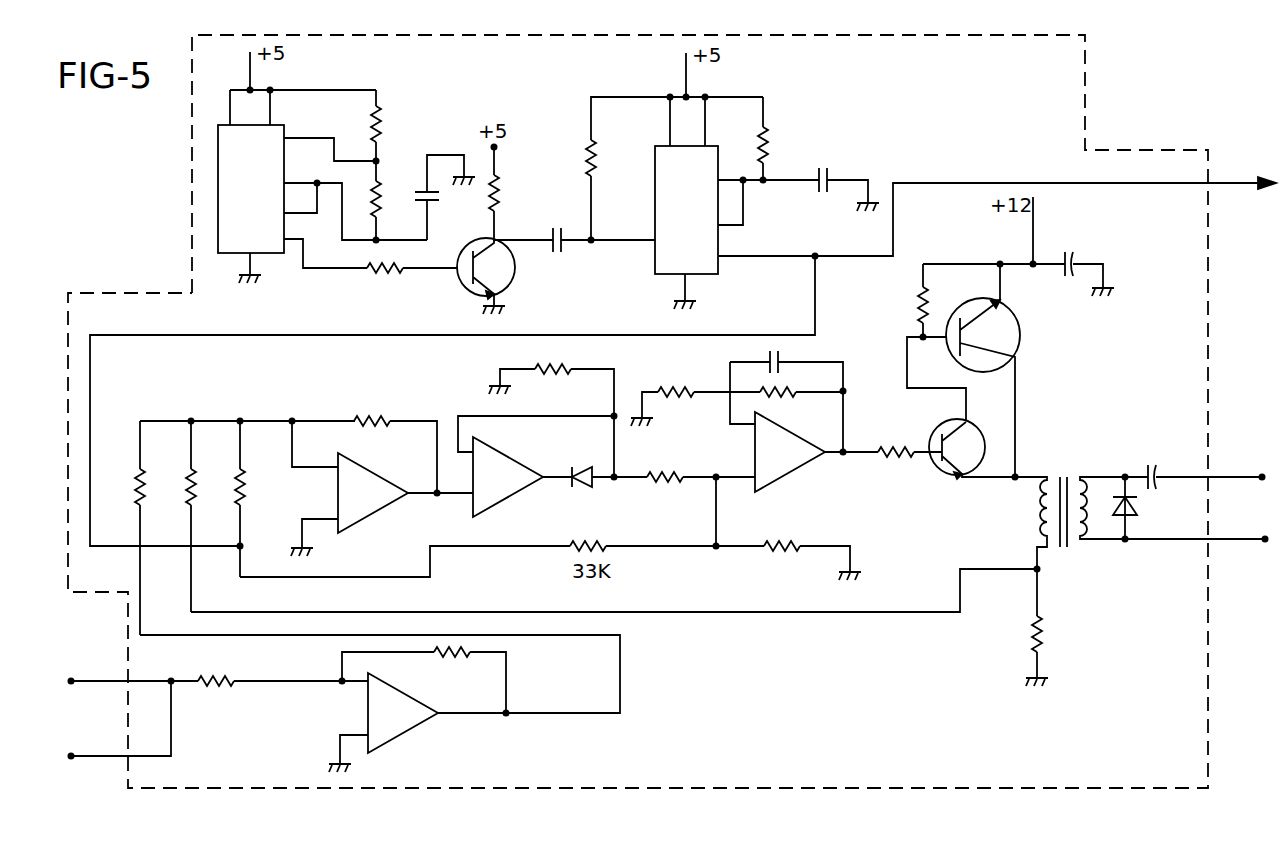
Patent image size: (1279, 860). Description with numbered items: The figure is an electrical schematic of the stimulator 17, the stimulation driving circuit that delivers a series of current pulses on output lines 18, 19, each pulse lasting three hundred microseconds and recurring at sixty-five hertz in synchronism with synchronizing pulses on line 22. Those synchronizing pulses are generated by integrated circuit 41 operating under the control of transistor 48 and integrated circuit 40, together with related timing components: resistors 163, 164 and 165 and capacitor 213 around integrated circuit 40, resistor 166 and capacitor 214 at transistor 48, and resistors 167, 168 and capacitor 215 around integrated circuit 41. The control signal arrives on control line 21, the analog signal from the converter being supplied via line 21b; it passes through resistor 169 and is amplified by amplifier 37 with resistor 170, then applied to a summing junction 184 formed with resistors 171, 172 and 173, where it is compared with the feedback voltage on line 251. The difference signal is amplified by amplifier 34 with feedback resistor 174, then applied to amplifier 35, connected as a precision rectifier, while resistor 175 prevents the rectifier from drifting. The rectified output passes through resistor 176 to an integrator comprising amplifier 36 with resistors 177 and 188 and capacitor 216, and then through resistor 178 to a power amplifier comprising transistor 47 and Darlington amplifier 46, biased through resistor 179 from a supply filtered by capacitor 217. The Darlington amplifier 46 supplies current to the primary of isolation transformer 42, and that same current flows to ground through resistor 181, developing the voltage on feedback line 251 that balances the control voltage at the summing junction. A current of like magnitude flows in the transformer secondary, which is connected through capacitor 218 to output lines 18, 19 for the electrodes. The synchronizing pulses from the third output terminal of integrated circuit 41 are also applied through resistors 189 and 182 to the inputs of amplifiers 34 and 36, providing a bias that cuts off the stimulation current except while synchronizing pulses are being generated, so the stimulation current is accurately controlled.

The stimulator 17 is at (1090, 103).
The output line 18 is at (1218, 476).
The output line 19 is at (1232, 542).
The control line 21 is at (93, 685).
The line 21b is at (93, 760).
The line 22 is at (1232, 186).
The amplifier 34 is at (378, 470).
The amplifier 35 is at (525, 463).
The amplifier 36 is at (805, 470).
The amplifier 37 is at (405, 737).
The integrated circuit 40 is at (232, 257).
The integrated circuit 41 is at (652, 258).
The isolation transformer 42 is at (1068, 476).
The Darlington amplifier 46 is at (1020, 330).
The transistor 47 is at (981, 426).
The transistor 48 is at (508, 290).
The resistor 163 is at (380, 116).
The resistor 164 is at (380, 178).
The resistor 165 is at (388, 275).
The resistor 166 is at (498, 165).
The resistor 167 is at (596, 150).
The resistor 168 is at (778, 130).
The resistor 169 is at (222, 688).
The resistor 170 is at (450, 660).
The resistor 171 is at (137, 488).
The resistor 172 is at (193, 500).
The resistor 173 is at (245, 478).
The resistor 174 is at (380, 412).
The resistor 175 is at (550, 362).
The resistor 176 is at (670, 470).
The resistor 177 is at (682, 390).
The resistor 178 is at (890, 462).
The resistor 179 is at (919, 300).
The resistor 181 is at (1045, 620).
The resistor 182 is at (800, 540).
The summing junction 184 is at (192, 420).
The resistor 188 is at (790, 399).
The resistor 189 is at (598, 540).
The capacitor 213 is at (438, 198).
The capacitor 214 is at (557, 227).
The capacitor 215 is at (828, 164).
The capacitor 216 is at (788, 356).
The capacitor 217 is at (1076, 256).
The capacitor 218 is at (1152, 470).
The feedback line 251 is at (880, 598).